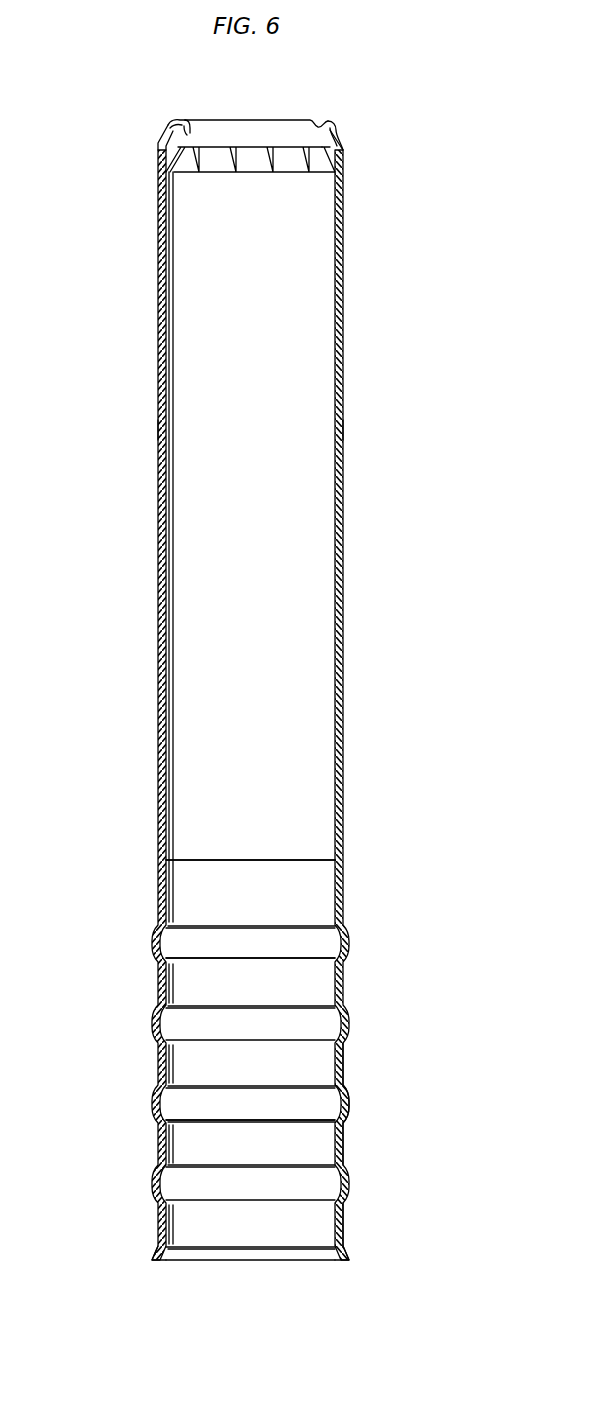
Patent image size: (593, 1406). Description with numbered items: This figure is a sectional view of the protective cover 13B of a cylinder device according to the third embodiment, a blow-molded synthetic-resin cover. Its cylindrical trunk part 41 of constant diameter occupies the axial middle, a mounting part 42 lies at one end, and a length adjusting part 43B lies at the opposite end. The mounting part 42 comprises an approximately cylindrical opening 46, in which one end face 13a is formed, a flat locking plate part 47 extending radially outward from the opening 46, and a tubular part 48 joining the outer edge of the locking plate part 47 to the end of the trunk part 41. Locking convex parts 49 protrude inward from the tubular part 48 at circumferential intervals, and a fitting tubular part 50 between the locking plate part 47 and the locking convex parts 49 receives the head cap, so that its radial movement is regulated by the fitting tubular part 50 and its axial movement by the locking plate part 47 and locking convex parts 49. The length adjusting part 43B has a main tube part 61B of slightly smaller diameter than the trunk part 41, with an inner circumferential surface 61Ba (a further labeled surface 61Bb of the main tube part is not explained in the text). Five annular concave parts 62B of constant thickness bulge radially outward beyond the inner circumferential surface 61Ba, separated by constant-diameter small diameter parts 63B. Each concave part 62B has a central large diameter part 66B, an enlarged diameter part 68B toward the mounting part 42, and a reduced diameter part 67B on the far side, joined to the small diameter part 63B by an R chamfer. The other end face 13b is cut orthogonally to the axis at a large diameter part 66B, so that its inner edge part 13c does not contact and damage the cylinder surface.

The protective cover 13B is at (480, 138).
The end face 13a is at (312, 124).
The end face 13b is at (348, 1262).
The edge part 13c is at (158, 1262).
The trunk part 41 is at (350, 404).
The mounting part 42 is at (350, 127).
The length adjusting part 43B is at (362, 888).
The opening 46 is at (188, 124).
The locking plate part 47 is at (170, 123).
The tubular part 48 is at (346, 152).
The locking convex parts 49 is at (168, 170).
The fitting tubular part 50 is at (162, 136).
The main tube part 61B is at (163, 872).
The inner circumferential surface 61Ba is at (172, 876).
The lower edge of first portion 61Bb is at (165, 997).
The concave parts 62B is at (345, 948).
The small diameter part 63B is at (340, 1048).
The large diameter parts 66B is at (332, 1150).
The reduced diameter part 67B is at (346, 1118).
The enlarged diameter part 68B is at (342, 1066).